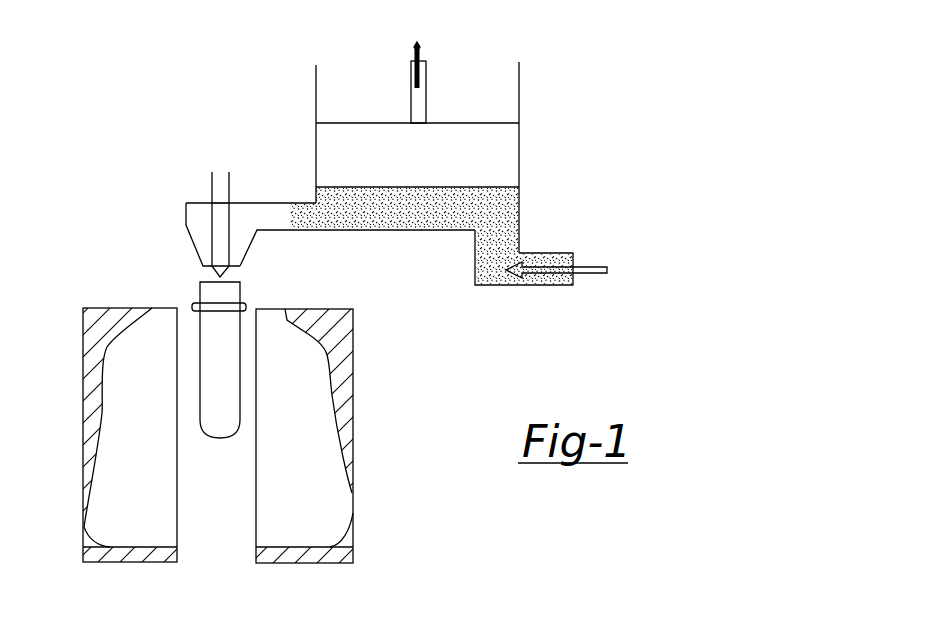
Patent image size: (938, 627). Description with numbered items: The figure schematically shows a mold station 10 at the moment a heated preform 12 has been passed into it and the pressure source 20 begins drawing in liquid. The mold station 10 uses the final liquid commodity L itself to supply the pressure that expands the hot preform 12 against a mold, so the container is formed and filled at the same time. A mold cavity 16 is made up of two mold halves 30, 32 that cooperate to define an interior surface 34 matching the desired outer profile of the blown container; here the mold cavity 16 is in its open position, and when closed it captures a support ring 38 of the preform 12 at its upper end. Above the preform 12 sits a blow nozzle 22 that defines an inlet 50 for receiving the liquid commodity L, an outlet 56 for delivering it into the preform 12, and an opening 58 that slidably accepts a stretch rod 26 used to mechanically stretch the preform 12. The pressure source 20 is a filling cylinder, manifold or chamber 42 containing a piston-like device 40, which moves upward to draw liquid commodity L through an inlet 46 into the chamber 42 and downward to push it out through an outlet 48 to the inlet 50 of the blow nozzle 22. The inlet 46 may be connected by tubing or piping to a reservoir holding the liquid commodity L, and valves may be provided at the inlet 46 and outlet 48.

The mold station 10 is at (150, 103).
The preform 12 is at (236, 318).
The mold cavity 16 is at (328, 363).
The pressure source 20 is at (521, 95).
The blow nozzle 22 is at (186, 214).
The stretch rod 26 is at (212, 174).
The mold half 30 is at (84, 350).
The mold half 32 is at (353, 389).
The interior surface 34 is at (103, 414).
The support ring 38 is at (193, 306).
The piston-like device 40 is at (512, 154).
The filling cylinder, manifold or chamber 42 is at (328, 80).
The inlet 46 is at (553, 285).
The outlet 48 is at (291, 218).
The inlet 50 is at (288, 210).
The outlet 56 is at (206, 271).
The opening 58 is at (212, 204).
The liquid commodity L is at (503, 212).